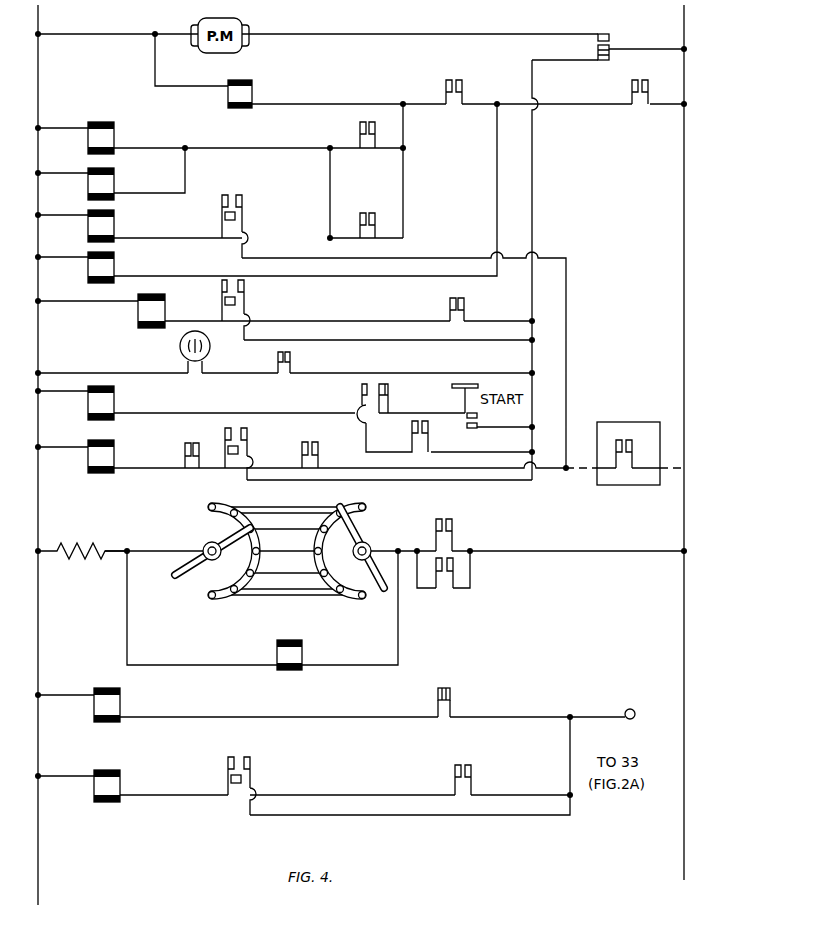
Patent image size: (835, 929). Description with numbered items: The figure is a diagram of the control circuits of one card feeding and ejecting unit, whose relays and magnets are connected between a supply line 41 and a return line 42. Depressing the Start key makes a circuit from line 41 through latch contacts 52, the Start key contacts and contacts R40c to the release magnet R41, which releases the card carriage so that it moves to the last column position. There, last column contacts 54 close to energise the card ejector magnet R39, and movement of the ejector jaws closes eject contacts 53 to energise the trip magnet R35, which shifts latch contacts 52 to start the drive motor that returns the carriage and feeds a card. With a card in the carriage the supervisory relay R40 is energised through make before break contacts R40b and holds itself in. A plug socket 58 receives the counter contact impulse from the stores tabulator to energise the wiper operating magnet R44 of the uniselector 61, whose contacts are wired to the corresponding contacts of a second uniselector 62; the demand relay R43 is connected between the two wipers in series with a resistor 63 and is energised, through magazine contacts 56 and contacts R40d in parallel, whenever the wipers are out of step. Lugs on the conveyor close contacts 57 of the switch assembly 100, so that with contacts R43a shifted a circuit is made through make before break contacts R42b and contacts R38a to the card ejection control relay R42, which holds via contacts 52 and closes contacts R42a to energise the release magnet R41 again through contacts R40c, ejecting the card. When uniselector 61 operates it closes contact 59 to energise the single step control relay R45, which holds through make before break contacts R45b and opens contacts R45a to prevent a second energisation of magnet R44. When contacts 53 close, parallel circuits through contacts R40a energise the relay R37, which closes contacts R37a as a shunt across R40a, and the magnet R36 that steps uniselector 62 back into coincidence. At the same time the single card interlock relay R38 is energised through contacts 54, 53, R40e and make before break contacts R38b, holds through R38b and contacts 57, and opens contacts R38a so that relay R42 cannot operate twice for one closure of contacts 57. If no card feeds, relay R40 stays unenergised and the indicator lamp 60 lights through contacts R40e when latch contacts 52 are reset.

The line 41 is at (684, 347).
The line 42 is at (40, 874).
The latch contacts 52 is at (609, 38).
The eject contacts 53 is at (456, 79).
The last column contacts 54 is at (641, 93).
The magazine contacts 56 is at (449, 518).
The contacts 57 is at (630, 440).
The plug socket 58 is at (630, 719).
The contact 59 is at (463, 764).
The indicator lamp 60 is at (209, 352).
The uniselector 61 is at (217, 551).
The uniselector 62 is at (349, 551).
The resistor 63 is at (96, 542).
The switch assembly 100 is at (628, 465).
The trip magnet R35 is at (240, 108).
The magnet R36 is at (106, 133).
The relay R37 is at (106, 180).
The contacts R37a is at (358, 213).
The single card interlock relay R38 is at (106, 222).
The contacts R38a is at (190, 460).
The make before break contacts R38b is at (242, 200).
The card ejector magnet R39 is at (106, 264).
The supervisory relay R40 is at (146, 316).
The contacts R40a is at (367, 134).
The make before break contacts R40b is at (244, 286).
The contacts R40c is at (360, 394).
The contacts R40d is at (444, 572).
The contacts R40e is at (290, 352).
The release magnet R41 is at (106, 398).
The card ejection control relay R42 is at (106, 452).
The contacts R42a is at (428, 427).
The make before break contacts R42b is at (232, 432).
The demand relay R43 is at (296, 670).
The contacts R43a is at (322, 431).
The wiper operating magnet R44 is at (112, 700).
The single step control relay R45 is at (110, 784).
The contacts R45a is at (446, 688).
The make before break contacts R45b is at (250, 762).